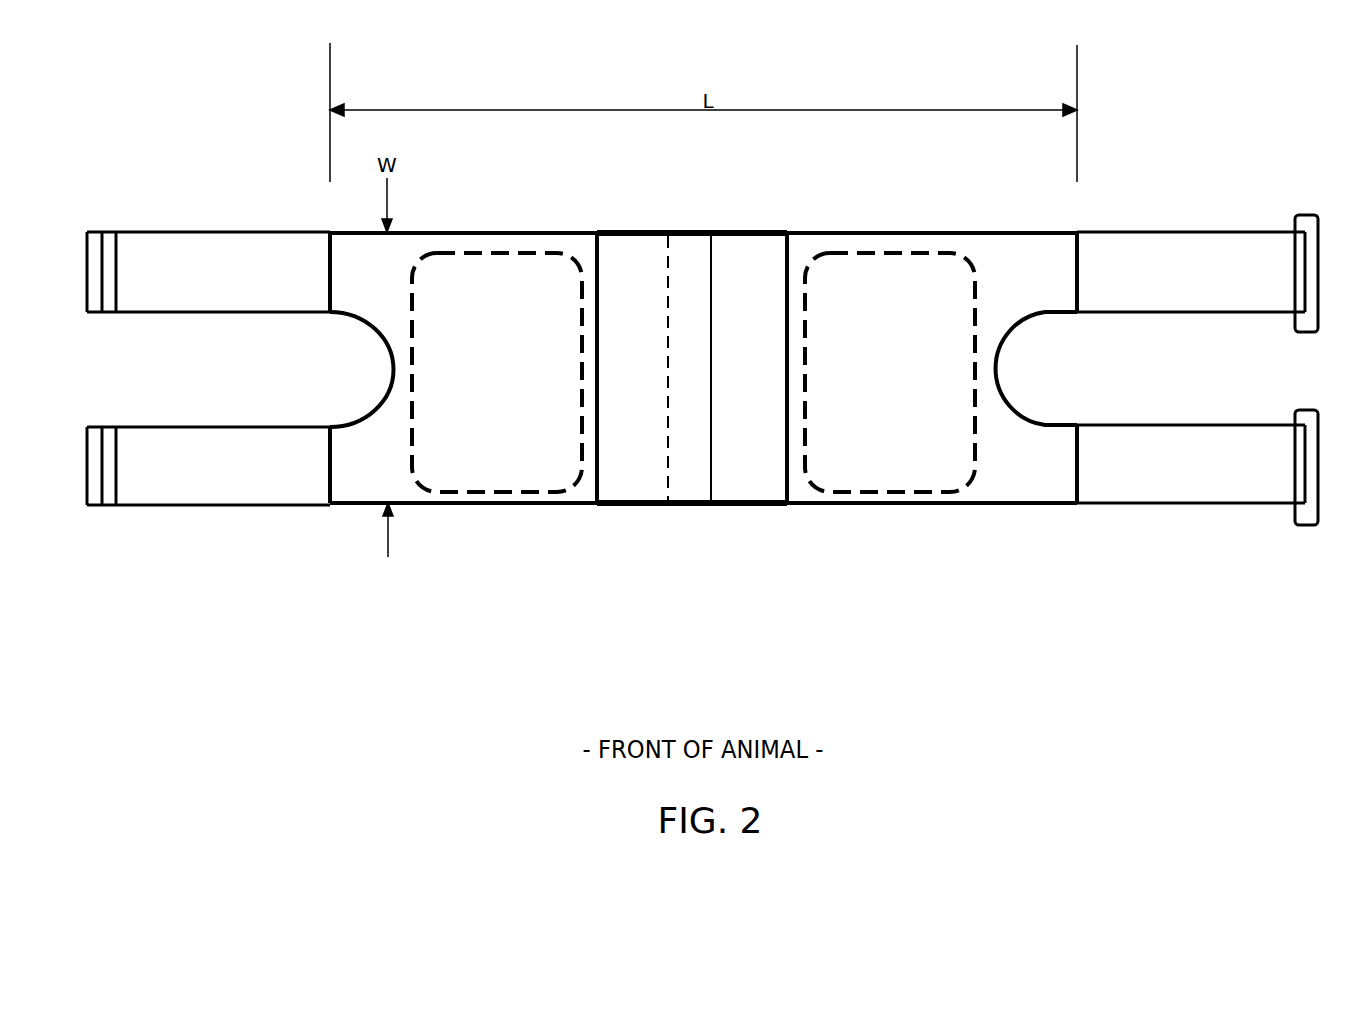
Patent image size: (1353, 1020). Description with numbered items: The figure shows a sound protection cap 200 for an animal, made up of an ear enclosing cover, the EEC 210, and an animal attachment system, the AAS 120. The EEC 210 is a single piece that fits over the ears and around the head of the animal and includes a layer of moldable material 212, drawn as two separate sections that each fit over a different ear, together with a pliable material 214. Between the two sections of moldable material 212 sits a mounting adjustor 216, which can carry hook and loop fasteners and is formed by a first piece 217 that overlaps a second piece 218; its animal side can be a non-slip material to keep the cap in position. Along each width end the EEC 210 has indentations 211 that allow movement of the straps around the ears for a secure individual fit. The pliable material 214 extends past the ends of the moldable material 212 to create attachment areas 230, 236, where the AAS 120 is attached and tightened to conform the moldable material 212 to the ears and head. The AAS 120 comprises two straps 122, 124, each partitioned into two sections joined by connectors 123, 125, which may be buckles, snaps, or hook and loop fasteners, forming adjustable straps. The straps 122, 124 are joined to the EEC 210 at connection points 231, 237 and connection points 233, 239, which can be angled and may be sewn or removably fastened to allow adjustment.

The sound protection cap 200 is at (208, 97).
The EEC 210 is at (520, 232).
The indentations 211 is at (343, 372).
The moldable material 212 is at (478, 497).
The pliable material 214 is at (348, 277).
The mounting adjustor 216 is at (690, 555).
The first piece 217 is at (627, 505).
The second piece 218 is at (752, 505).
The attachment area 230 is at (362, 522).
The connection point 231 is at (330, 482).
The connection point 233 is at (328, 262).
The attachment area 236 is at (1046, 520).
The connection point 237 is at (1083, 482).
The connection point 239 is at (1083, 250).
The AAS 120 is at (220, 568).
The strap 122 is at (215, 425).
The connector 123 is at (95, 425).
The strap 124 is at (237, 230).
The connector 125 is at (97, 230).